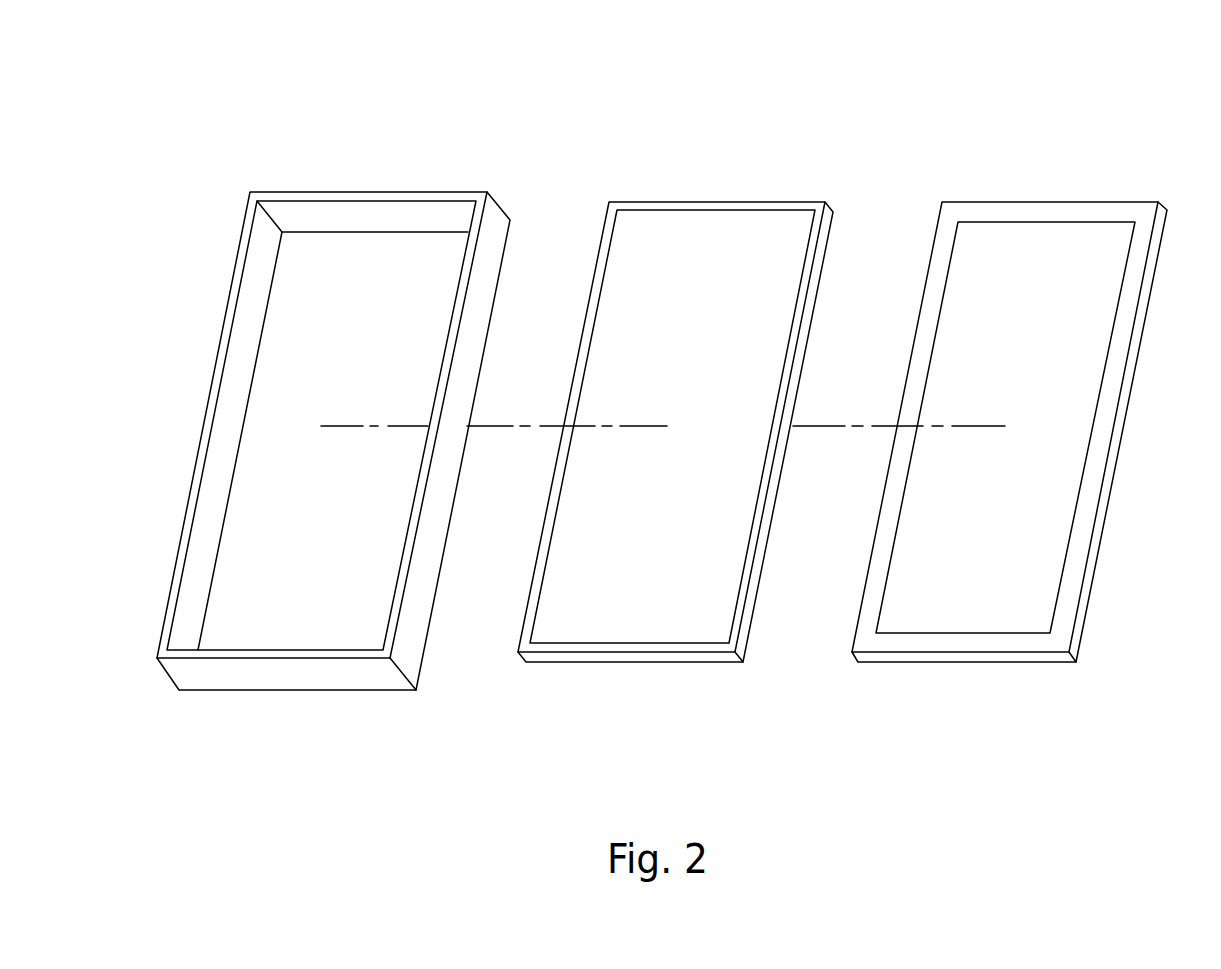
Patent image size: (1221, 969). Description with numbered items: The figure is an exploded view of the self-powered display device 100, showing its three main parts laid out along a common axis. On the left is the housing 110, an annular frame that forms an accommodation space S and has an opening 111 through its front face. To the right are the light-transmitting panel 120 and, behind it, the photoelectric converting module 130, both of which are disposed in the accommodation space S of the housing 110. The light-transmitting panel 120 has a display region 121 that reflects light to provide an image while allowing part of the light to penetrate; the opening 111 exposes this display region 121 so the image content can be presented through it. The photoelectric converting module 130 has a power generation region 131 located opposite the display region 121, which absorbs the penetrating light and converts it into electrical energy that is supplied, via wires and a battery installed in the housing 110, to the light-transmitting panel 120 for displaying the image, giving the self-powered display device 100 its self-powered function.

The self-powered display device 100 is at (90, 68).
The housing 110 is at (367, 197).
The opening 111 is at (313, 215).
The accommodation space S is at (302, 310).
The light-transmitting panel 120 is at (737, 205).
The display region 121 is at (683, 223).
The photoelectric converting module 130 is at (1070, 208).
The power generation region 131 is at (1007, 240).